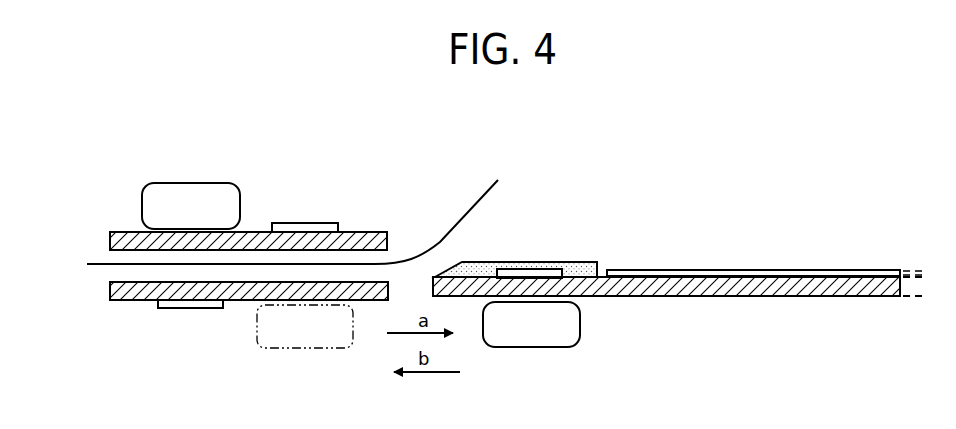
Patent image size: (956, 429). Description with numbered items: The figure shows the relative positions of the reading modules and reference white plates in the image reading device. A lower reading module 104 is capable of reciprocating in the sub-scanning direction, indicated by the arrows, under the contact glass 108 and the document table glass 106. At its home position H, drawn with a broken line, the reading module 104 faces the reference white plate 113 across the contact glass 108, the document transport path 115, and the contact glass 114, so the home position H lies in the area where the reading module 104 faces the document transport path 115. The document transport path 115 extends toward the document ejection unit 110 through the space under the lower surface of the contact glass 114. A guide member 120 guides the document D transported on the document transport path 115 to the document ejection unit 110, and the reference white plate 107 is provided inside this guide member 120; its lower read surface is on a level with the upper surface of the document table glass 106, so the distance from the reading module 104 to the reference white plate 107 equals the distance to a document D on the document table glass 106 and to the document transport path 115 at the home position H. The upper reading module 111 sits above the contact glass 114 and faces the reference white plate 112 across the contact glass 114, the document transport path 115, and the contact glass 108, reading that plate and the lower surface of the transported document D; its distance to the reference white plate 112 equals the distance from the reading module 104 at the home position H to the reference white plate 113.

The reading module 104 is at (535, 348).
The document table glass 106 is at (810, 297).
The reference white plate 107 is at (551, 276).
The contact glass 108 is at (142, 302).
The document ejection unit 110 is at (527, 156).
The reading module 111 is at (188, 182).
The reference white plate 112 is at (190, 309).
The reference white plate 113 is at (303, 222).
The contact glass 114 is at (353, 231).
The document transport path 115 is at (100, 263).
The guide member 120 is at (487, 261).
The home position H is at (293, 350).
The document D is at (790, 269).